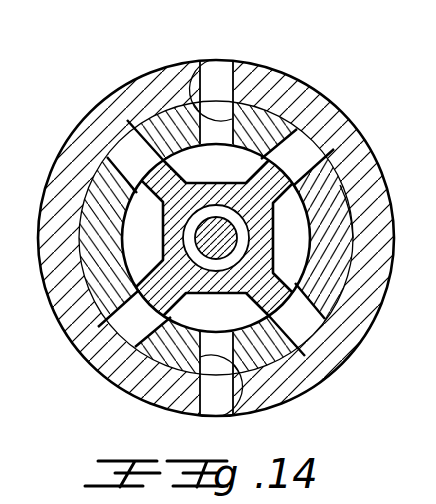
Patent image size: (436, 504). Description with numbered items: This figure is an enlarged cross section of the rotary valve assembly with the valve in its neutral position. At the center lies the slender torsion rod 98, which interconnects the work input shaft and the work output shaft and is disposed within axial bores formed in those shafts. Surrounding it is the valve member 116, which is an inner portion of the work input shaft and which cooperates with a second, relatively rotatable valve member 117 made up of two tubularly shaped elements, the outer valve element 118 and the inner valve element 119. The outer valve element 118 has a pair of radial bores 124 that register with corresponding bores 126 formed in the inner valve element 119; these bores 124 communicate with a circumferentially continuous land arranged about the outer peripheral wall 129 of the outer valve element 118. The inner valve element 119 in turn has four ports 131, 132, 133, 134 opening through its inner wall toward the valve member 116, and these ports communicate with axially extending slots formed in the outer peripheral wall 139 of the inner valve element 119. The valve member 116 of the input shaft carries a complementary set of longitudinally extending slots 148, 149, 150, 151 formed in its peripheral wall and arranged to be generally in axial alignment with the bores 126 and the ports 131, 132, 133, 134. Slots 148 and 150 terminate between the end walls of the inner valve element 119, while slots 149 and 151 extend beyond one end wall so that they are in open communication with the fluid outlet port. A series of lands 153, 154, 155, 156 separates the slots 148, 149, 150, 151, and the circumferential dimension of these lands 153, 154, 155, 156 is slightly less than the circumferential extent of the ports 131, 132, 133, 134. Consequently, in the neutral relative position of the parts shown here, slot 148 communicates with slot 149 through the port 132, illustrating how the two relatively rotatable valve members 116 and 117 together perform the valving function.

The torsion rod 98 is at (218, 245).
The valve member 116 is at (108, 292).
The valve member 117 is at (106, 88).
The outer valve element 118 is at (296, 90).
The inner valve element 119 is at (330, 211).
The radial bore 124 is at (233, 62).
The bore 126 is at (272, 80).
The outer peripheral wall 129 is at (163, 43).
The port 131 is at (120, 148).
The port 132 is at (122, 345).
The port 133 is at (318, 314).
The port 134 is at (268, 173).
The outer peripheral wall 139 is at (343, 294).
The slot 148 is at (157, 253).
The slot 149 is at (247, 321).
The slot 150 is at (303, 223).
The slot 151 is at (227, 166).
The land 153 is at (125, 314).
The land 154 is at (348, 263).
The land 155 is at (346, 208).
The land 156 is at (150, 173).